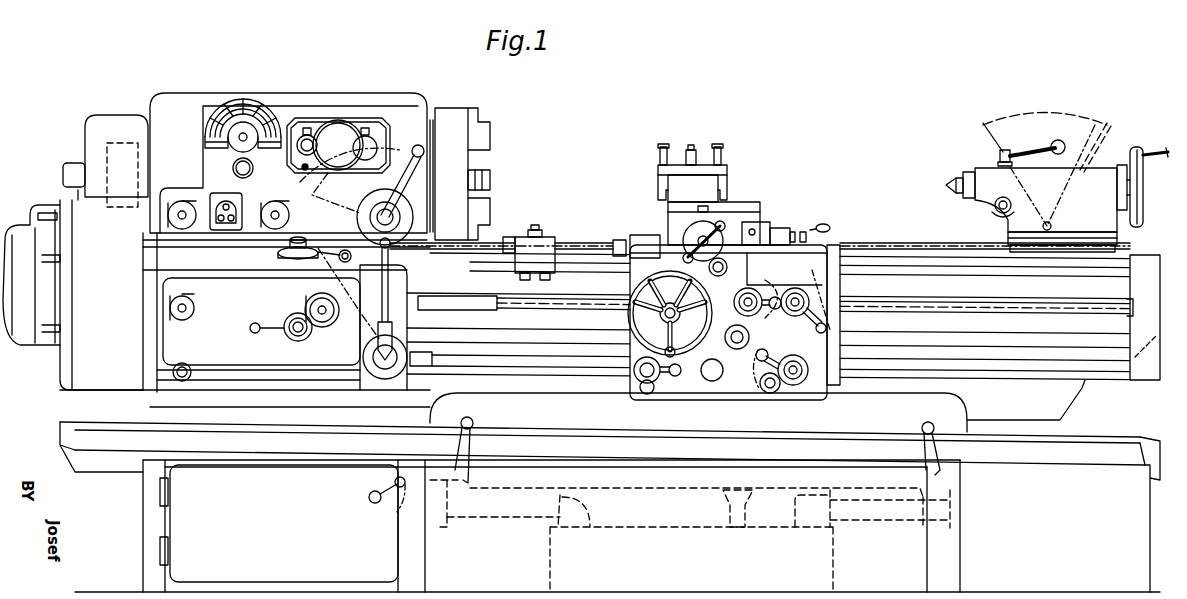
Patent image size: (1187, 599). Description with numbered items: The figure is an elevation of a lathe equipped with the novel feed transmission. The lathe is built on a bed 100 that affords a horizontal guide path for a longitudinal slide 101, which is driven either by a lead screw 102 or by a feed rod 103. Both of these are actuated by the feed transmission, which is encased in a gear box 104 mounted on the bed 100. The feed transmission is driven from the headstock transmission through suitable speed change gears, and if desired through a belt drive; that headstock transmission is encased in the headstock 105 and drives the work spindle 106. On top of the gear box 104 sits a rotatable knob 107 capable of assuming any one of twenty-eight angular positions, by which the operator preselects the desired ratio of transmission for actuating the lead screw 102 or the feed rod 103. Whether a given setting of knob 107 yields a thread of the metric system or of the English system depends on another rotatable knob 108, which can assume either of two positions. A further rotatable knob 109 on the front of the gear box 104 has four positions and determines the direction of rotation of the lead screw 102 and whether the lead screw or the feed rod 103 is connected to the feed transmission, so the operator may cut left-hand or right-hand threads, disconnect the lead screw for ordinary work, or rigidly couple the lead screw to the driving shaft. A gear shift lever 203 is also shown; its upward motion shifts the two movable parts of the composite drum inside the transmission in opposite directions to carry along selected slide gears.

The bed 100 is at (1133, 366).
The longitudinal slide 101 is at (765, 265).
The lead screw 102 is at (463, 299).
The feed rod 103 is at (474, 354).
The gear box 104 is at (165, 343).
The headstock 105 is at (172, 117).
The work spindle 106 is at (433, 168).
The rotatable knob 107 is at (289, 246).
The rotatable knob 108 is at (193, 306).
The rotatable knob 109 is at (331, 320).
The gear shift lever 203 is at (254, 332).